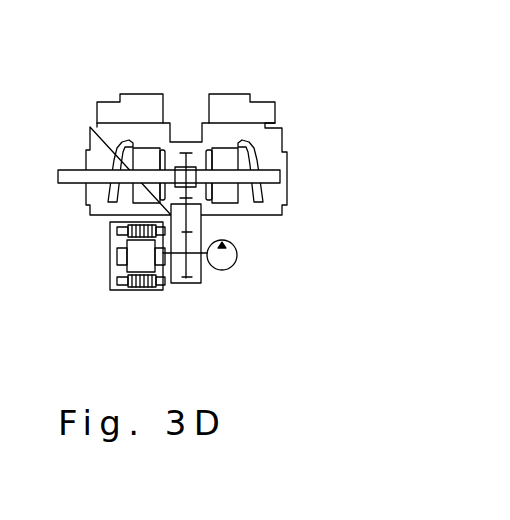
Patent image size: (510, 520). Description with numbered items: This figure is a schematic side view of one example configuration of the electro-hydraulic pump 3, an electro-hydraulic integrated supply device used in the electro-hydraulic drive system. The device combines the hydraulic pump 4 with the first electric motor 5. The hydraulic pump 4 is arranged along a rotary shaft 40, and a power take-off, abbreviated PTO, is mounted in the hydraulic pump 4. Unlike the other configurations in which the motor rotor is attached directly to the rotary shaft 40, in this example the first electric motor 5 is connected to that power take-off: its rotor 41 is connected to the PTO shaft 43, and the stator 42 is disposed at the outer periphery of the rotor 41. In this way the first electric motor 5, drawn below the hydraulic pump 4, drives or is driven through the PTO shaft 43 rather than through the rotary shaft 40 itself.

The electro-hydraulic pump 3 is at (305, 86).
The hydraulic pump 4 is at (166, 110).
The rotary shaft 40 is at (68, 169).
The first electric motor 5 is at (103, 305).
The rotor 41 is at (132, 265).
The stator 42 is at (140, 290).
The PTO shaft 43 is at (120, 253).